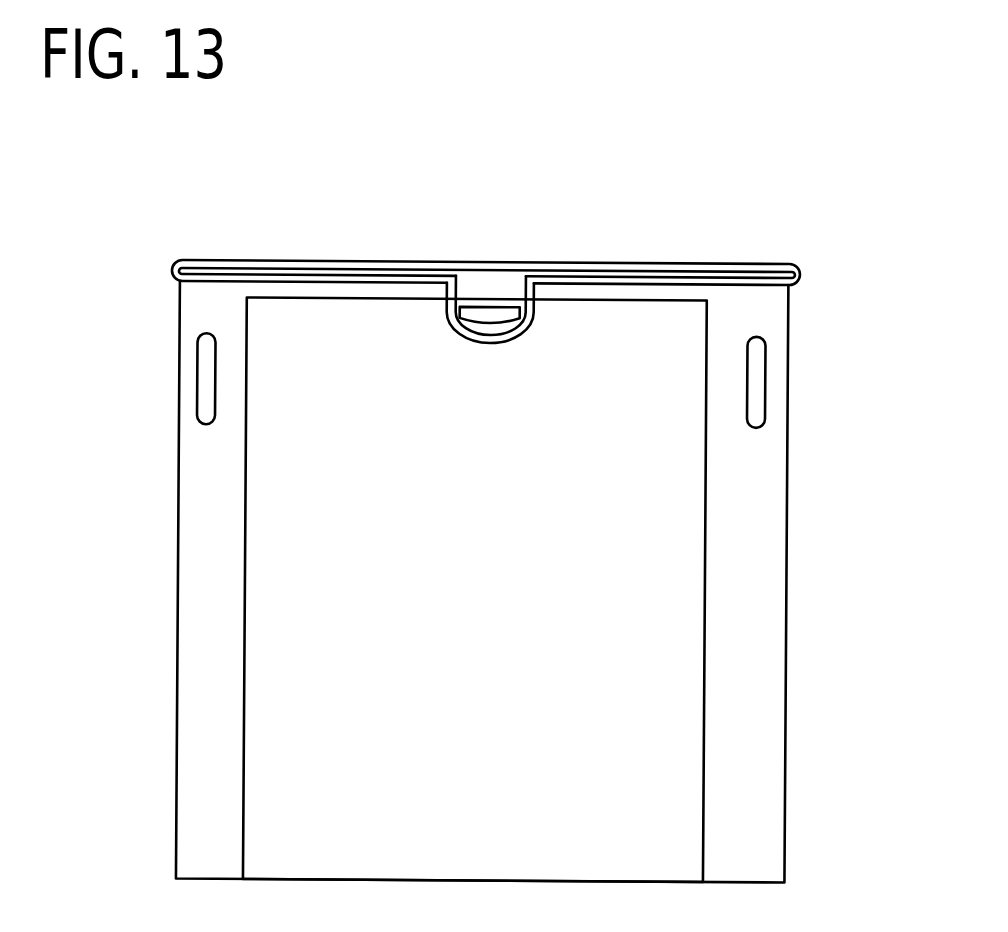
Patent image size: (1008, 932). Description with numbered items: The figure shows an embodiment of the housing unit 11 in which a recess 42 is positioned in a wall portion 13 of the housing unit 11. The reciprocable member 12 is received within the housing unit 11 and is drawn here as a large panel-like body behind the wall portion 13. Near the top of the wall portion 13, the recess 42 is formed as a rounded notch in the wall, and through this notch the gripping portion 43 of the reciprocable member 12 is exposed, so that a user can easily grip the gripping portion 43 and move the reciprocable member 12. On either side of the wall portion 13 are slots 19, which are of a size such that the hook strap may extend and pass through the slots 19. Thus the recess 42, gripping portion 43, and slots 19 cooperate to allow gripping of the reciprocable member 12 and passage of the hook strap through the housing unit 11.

The housing unit 11 is at (787, 697).
The reciprocable member 12 is at (663, 513).
The wall portion 13 is at (198, 294).
The slots 19 is at (767, 352).
The recess 42 is at (510, 280).
The gripping portion 43 is at (488, 308).